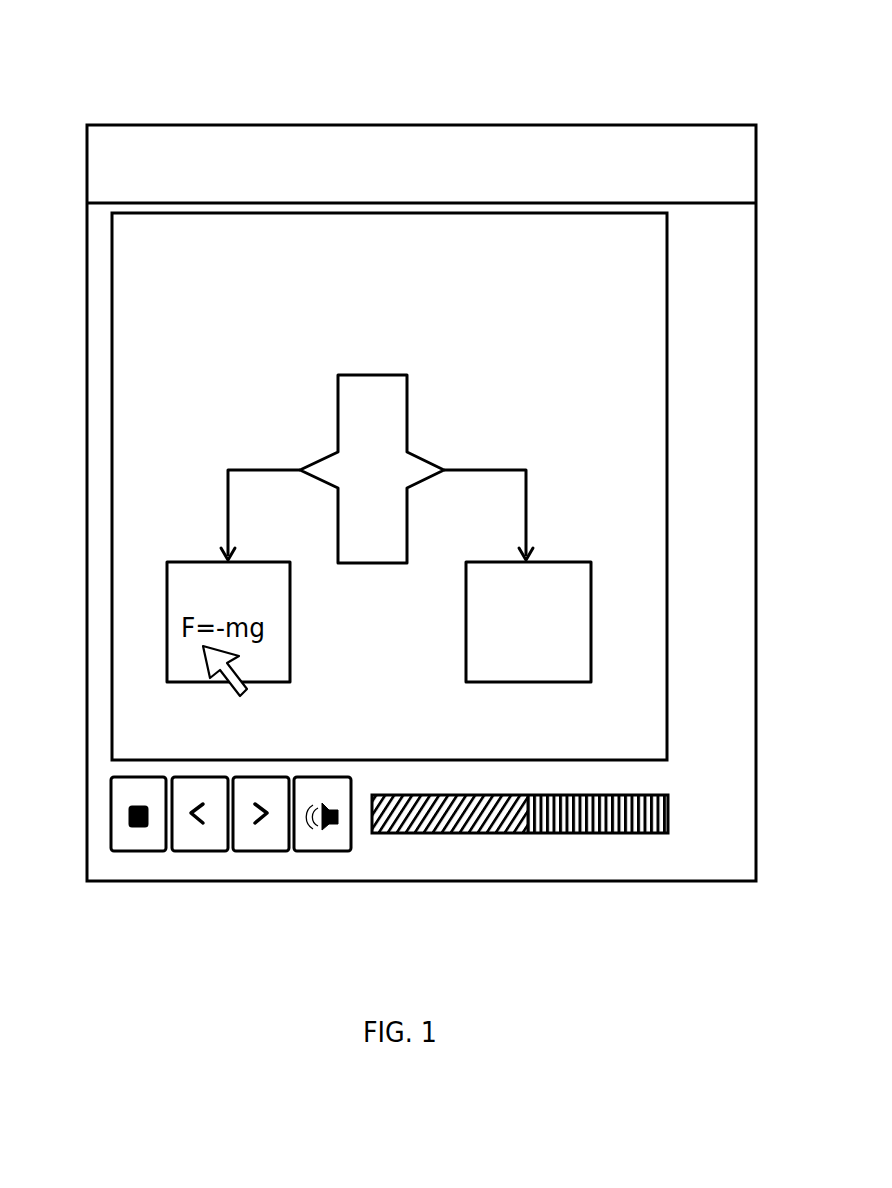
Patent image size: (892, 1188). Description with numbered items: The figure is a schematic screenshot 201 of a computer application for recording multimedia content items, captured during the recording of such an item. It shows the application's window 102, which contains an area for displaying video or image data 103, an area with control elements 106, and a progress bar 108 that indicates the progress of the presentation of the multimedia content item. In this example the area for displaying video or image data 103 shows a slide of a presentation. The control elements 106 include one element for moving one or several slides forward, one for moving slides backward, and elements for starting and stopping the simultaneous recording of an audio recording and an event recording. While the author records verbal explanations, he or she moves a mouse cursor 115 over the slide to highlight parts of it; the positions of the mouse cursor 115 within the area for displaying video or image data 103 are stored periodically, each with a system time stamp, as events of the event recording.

The second screenshot 201 is at (167, 84).
The window 102 is at (323, 143).
The area for displaying video or image data 103 is at (340, 252).
The control elements 106 is at (223, 825).
The progress bar 108 is at (492, 848).
The mouse cursor 115 is at (260, 693).